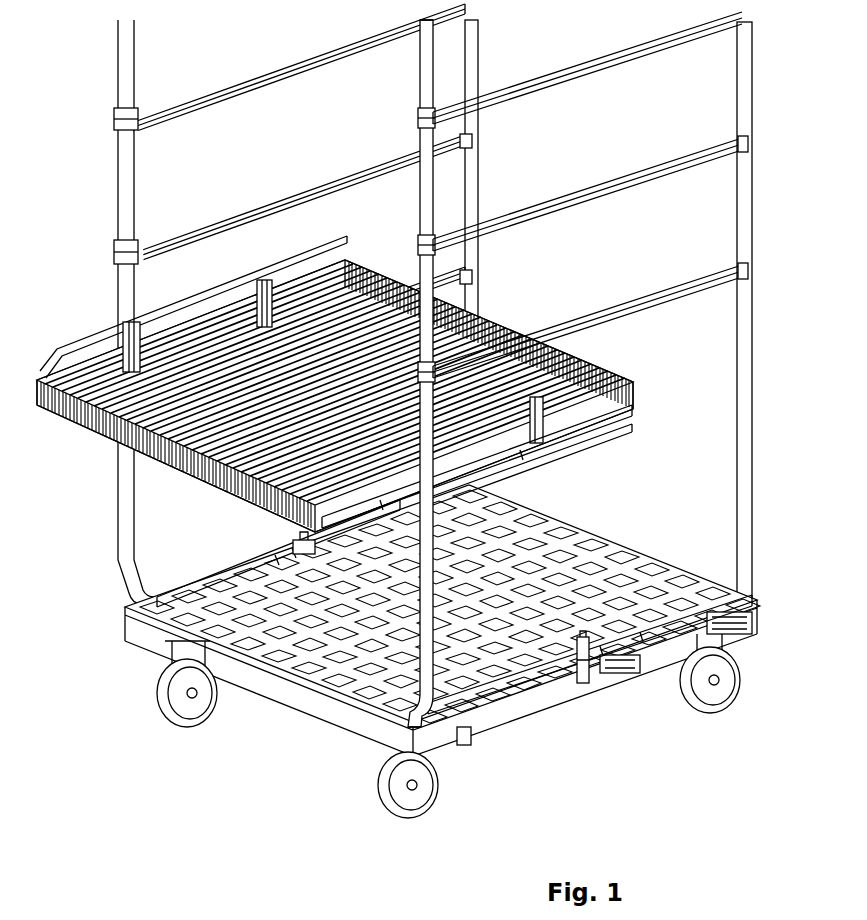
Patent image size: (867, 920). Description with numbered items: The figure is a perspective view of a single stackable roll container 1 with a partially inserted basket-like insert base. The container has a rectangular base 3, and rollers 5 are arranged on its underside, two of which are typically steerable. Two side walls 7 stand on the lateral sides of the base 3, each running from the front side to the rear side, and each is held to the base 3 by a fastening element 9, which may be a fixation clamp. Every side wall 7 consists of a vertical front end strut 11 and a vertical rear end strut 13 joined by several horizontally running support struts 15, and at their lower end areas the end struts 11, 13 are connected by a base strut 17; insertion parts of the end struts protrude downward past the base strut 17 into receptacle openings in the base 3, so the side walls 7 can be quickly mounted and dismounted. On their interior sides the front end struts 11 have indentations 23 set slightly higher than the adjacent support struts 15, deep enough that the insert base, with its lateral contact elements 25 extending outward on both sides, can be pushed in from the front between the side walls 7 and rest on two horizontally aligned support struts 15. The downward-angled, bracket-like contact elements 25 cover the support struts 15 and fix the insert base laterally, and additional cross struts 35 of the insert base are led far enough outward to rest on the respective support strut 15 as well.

The stackable roll container 1 is at (95, 157).
The base 3 is at (287, 700).
The rollers 5 is at (190, 727).
The side walls 7 is at (118, 280).
The fastening element 9 is at (583, 683).
The vertical front end strut 11 is at (134, 183).
The vertical rear end strut 13 is at (470, 185).
The support struts 15 is at (348, 178).
The base strut 17 is at (200, 575).
The indentations 23 is at (120, 115).
The lateral contact elements 25 is at (625, 425).
The cross struts 35 is at (545, 470).